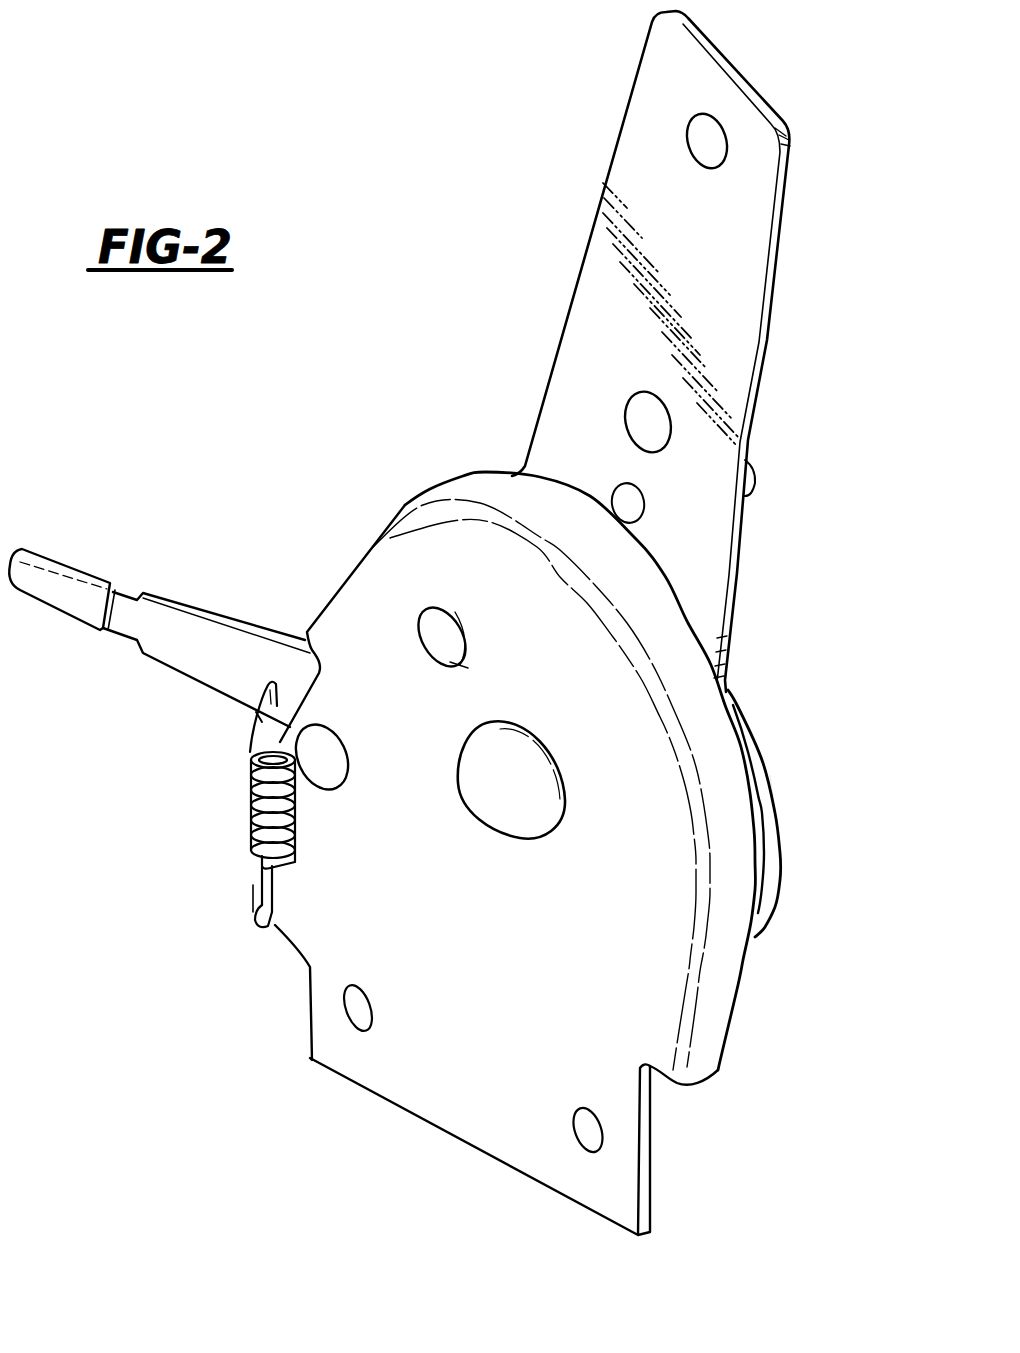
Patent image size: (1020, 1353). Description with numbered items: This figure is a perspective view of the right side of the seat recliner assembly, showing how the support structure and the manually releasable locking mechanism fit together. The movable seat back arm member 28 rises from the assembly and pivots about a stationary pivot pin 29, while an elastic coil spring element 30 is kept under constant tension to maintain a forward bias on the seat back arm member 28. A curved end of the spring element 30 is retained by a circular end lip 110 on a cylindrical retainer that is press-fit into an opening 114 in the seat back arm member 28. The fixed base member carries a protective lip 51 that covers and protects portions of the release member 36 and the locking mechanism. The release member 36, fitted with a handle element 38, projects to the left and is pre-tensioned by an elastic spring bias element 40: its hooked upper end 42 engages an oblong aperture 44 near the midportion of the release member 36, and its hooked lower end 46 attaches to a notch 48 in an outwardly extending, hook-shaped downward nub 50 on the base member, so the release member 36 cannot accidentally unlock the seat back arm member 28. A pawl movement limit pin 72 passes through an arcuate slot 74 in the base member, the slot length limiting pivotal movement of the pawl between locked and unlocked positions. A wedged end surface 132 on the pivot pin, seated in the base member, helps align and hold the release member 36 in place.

The seat back arm member 28 is at (625, 134).
The stationary pivot pin 29 is at (542, 830).
The elastic coil spring element 30 is at (776, 838).
The release member 36 is at (204, 638).
The handle element 38 is at (40, 573).
The elastic spring bias element 40 is at (249, 812).
The hooked upper end 42 is at (254, 717).
The oblong aperture 44 is at (262, 683).
The hooked lower end 46 is at (252, 915).
The notch 48 is at (275, 927).
The hook-shaped downward nub 50 is at (252, 896).
The protective lip 51 is at (422, 515).
The pawl movement limit pin 72 is at (423, 633).
The arcuate slot 74 is at (476, 662).
The circular end lip 110 is at (755, 485).
The opening 114 is at (612, 503).
The wedged end surface 132 is at (348, 746).